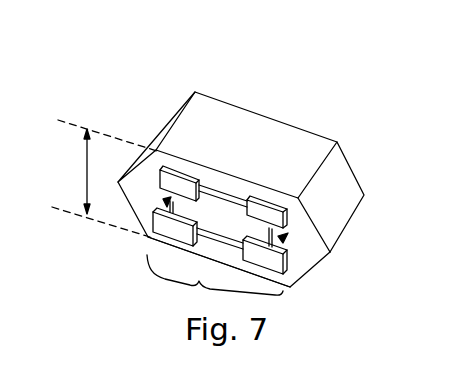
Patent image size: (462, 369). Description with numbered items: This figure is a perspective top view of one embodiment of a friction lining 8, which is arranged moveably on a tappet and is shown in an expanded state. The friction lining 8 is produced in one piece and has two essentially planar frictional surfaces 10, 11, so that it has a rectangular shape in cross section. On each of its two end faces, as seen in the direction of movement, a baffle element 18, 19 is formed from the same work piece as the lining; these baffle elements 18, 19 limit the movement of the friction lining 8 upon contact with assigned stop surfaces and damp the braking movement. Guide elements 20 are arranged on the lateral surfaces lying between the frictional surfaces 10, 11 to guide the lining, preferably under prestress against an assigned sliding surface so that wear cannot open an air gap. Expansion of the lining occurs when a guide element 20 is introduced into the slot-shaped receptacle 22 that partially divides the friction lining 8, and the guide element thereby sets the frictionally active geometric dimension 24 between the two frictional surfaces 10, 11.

The friction lining 8 is at (308, 84).
The frictional surface 10 is at (222, 122).
The frictional surface 11 is at (290, 297).
The baffle element 18 is at (343, 181).
The baffle element 19 is at (170, 123).
The guide element 20 is at (199, 282).
The receptacle 22 is at (166, 200).
The frictionally active geometric dimension 24 is at (85, 182).